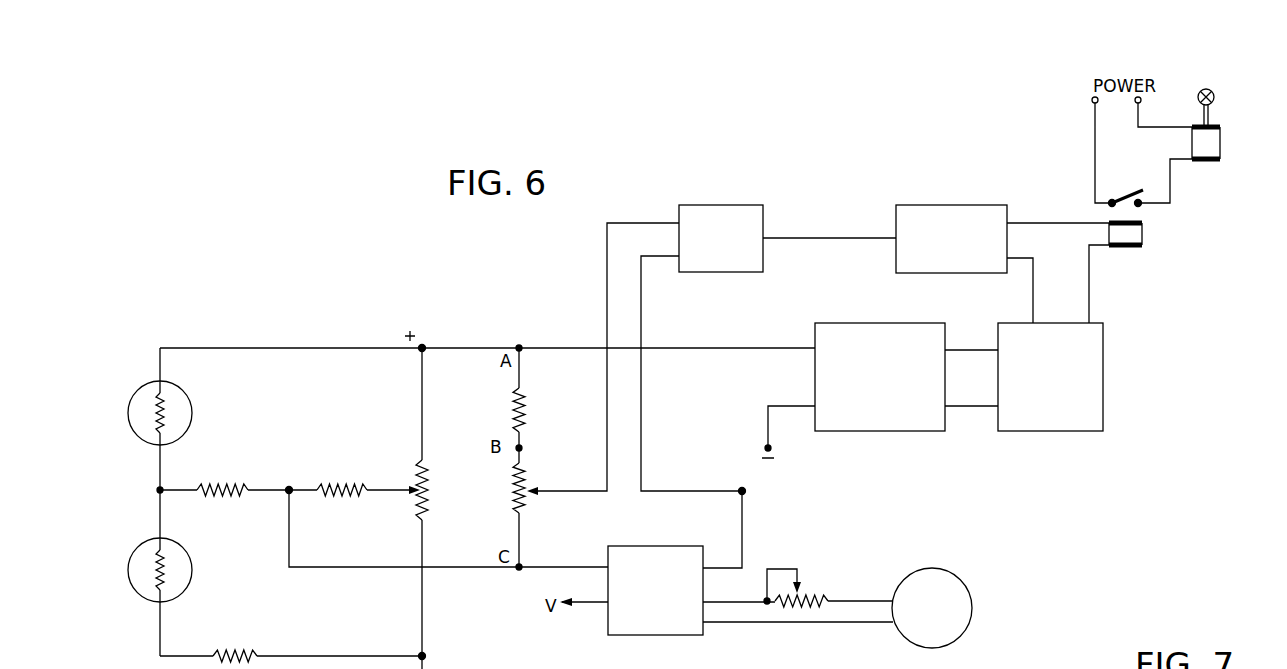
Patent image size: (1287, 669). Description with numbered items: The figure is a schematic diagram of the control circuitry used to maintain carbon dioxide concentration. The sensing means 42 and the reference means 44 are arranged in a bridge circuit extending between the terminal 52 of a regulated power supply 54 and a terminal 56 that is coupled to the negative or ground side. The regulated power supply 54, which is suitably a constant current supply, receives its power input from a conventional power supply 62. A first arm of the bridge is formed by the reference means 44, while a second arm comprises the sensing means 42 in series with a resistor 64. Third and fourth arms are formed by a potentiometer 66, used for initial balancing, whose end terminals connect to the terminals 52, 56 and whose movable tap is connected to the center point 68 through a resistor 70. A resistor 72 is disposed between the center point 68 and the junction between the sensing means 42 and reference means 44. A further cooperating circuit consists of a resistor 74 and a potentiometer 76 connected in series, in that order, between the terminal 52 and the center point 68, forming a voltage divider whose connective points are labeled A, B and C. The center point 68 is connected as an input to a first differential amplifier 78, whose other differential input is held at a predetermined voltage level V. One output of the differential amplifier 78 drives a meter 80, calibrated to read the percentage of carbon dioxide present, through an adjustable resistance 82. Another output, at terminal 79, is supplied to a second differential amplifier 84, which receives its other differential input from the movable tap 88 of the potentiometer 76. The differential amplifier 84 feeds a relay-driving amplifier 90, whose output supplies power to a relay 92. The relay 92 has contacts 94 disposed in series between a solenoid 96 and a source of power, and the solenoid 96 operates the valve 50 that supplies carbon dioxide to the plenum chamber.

The sensing means 42 is at (138, 557).
The reference means 44 is at (192, 420).
The valve 50 is at (1213, 90).
The terminal 52 is at (424, 346).
The regulated power supply 54 is at (856, 432).
The terminal 56 is at (445, 662).
The power supply 62 is at (1055, 432).
The resistor 64 is at (240, 655).
The potentiometer 66 is at (428, 487).
The center point 68 is at (289, 488).
The resistor 70 is at (352, 490).
The resistor 72 is at (225, 490).
The resistor 74 is at (525, 410).
The potentiometer 76 is at (522, 500).
The first differential amplifier 78 is at (671, 546).
The terminal 79 is at (742, 490).
The meter 80 is at (970, 590).
The adjustable resistance 82 is at (800, 580).
The second differential amplifier 84 is at (740, 205).
The movable tap 88 is at (547, 490).
The relay-driving amplifier 90 is at (968, 205).
The relay 92 is at (1142, 238).
The contacts 94 is at (1128, 197).
The solenoid 96 is at (1220, 145).